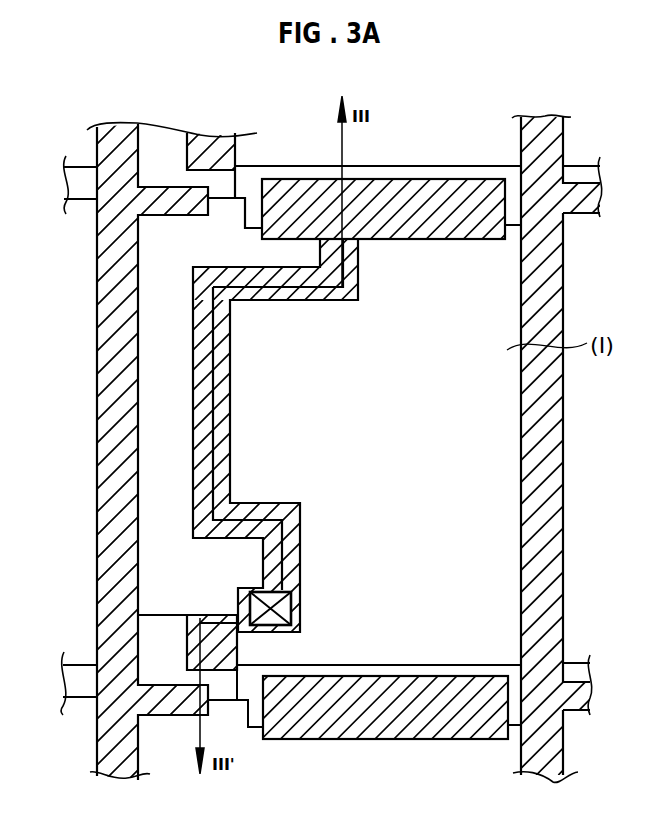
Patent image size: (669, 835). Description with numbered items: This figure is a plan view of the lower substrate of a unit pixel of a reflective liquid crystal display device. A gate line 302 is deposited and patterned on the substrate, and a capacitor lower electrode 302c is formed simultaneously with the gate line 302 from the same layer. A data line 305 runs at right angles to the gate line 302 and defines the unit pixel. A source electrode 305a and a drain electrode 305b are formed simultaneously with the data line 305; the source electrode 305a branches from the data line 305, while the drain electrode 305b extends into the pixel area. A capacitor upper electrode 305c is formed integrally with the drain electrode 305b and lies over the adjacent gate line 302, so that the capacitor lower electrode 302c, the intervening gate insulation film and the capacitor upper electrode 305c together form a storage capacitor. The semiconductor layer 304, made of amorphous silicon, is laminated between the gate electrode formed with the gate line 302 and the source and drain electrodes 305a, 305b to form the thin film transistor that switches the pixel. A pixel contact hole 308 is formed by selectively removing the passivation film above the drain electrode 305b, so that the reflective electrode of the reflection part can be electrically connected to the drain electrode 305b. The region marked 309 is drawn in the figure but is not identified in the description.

The gate line 302 is at (79, 205).
The capacitor lower electrode 302c is at (250, 728).
The semiconductor layer 304 is at (164, 628).
The data line 305 is at (100, 407).
The source electrode 305a is at (170, 716).
The drain electrode 305b is at (300, 548).
The capacitor upper electrode 305c is at (452, 740).
The pixel contact hole 308 is at (293, 618).
The storage capacitor region 309 is at (416, 688).